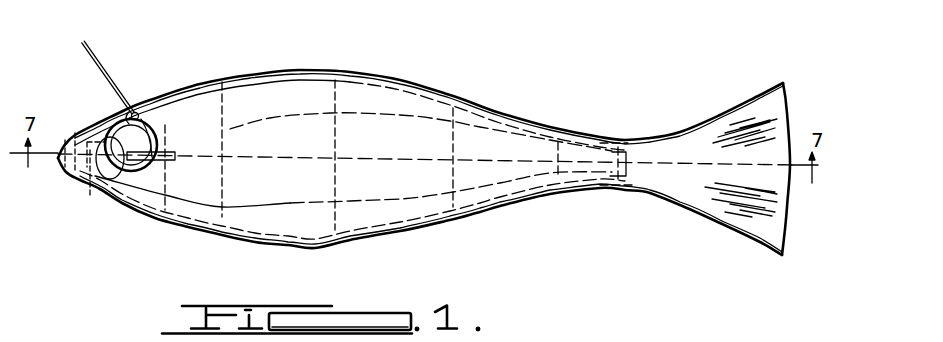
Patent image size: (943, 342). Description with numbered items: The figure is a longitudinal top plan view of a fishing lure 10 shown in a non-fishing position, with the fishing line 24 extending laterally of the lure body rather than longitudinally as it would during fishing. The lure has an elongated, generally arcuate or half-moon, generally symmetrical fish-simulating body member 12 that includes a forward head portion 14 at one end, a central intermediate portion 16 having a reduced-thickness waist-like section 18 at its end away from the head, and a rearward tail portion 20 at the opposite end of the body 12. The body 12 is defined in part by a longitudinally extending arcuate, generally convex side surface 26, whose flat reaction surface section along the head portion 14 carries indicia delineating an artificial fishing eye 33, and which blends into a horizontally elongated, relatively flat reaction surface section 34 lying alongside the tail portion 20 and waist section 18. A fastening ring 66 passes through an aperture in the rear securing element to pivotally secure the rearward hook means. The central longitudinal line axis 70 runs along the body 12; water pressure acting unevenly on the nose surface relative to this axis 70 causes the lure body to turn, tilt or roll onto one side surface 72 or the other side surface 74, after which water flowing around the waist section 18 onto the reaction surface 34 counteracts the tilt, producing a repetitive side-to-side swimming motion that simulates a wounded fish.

The fishing lure 10 is at (506, 94).
The body member 12 is at (487, 194).
The head portion 14 is at (113, 192).
The intermediate portion 16 is at (358, 228).
The waist-like section 18 is at (633, 153).
The tail portion 20 is at (768, 163).
The fishing line 24 is at (108, 74).
The side surface 26 is at (300, 166).
The artificial fishing eye 33 is at (108, 176).
The reaction surface section 34 is at (772, 134).
The fastening ring 66 is at (157, 115).
The central longitudinal line axis 70 is at (372, 113).
The side surface 72 is at (277, 72).
The side surface 74 is at (431, 229).